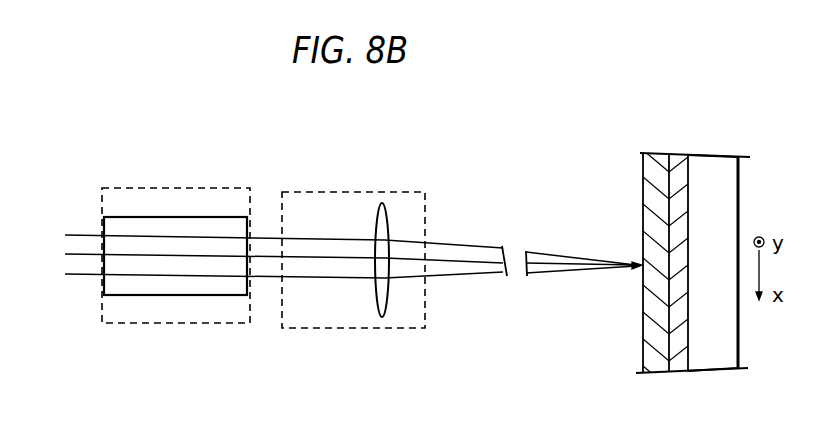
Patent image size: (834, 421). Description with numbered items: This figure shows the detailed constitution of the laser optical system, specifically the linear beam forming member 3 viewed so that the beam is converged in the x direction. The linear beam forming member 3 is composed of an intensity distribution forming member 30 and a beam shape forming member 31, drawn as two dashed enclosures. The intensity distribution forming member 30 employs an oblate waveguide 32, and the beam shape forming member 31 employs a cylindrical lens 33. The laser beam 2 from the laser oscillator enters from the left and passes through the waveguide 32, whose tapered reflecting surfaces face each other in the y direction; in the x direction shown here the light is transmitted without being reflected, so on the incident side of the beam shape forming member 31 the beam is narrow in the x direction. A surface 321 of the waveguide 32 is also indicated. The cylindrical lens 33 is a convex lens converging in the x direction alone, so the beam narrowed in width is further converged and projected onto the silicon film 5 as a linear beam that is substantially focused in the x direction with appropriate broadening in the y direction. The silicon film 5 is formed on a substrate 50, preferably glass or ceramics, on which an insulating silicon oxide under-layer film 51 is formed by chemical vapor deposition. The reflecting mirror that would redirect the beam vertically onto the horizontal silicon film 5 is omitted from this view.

The laser beam 2 is at (83, 277).
The linear beam forming member 3 is at (223, 137).
The intensity distribution forming member 30 is at (218, 188).
The beam shape forming member 31 is at (313, 192).
The oblate waveguide 32 is at (212, 296).
The surface of beam shaping optical element 321 is at (140, 296).
The cylindrical lens 33 is at (377, 218).
The silicon film 5 is at (688, 249).
The substrate 50 is at (713, 160).
The under-layer film 51 is at (675, 153).